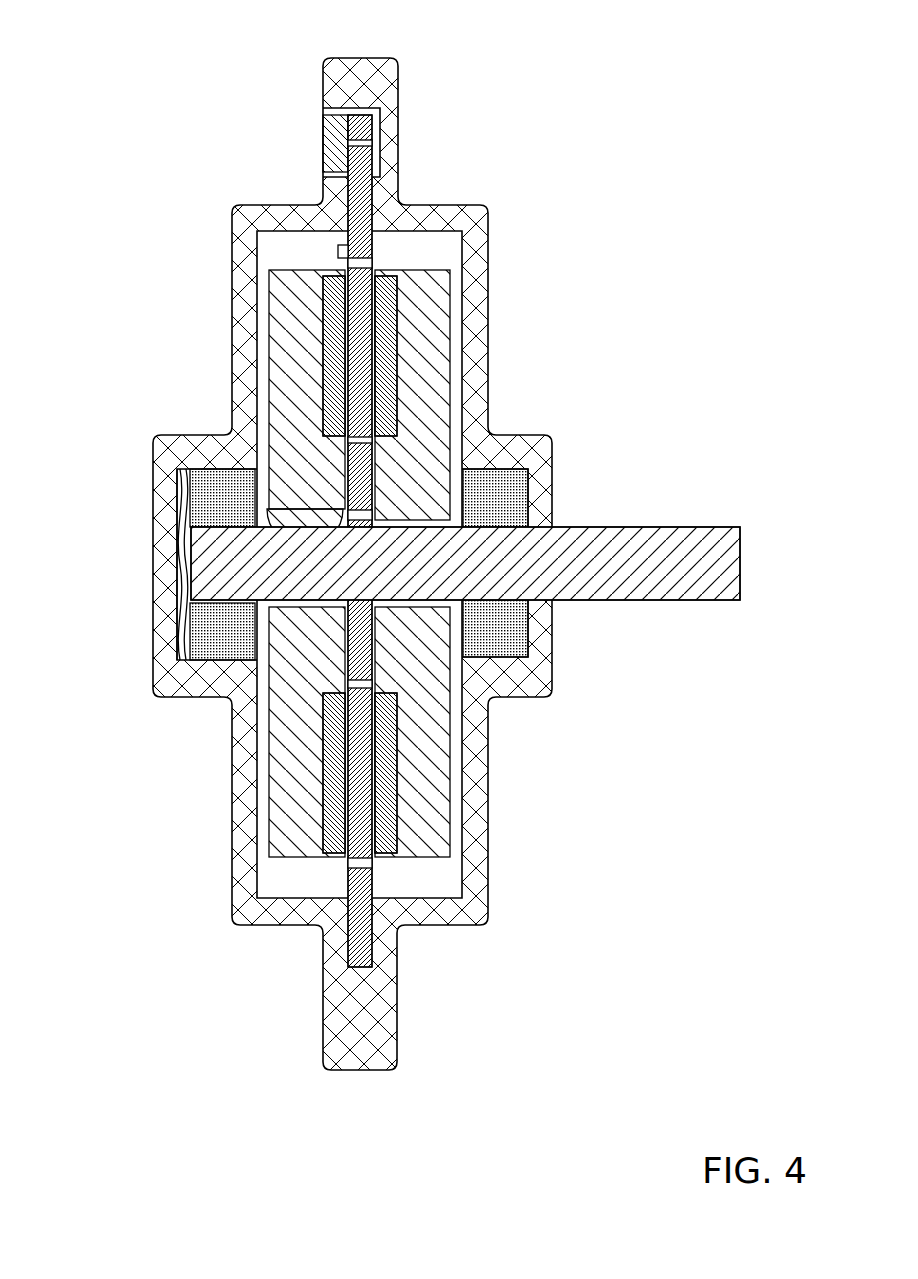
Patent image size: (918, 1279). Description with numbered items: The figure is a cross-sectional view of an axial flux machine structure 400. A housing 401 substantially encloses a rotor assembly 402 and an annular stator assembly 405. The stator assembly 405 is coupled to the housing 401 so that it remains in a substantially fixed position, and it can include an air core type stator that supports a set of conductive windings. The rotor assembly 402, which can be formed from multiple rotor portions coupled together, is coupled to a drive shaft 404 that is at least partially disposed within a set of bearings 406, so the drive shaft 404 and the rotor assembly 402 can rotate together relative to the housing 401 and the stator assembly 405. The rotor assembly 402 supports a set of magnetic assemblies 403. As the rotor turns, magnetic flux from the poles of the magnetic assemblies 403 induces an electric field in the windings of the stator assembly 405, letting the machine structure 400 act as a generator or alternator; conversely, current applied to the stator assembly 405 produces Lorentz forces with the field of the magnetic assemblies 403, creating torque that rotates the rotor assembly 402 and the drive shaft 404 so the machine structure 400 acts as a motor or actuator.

The axial flux machine structure 400 is at (160, 46).
The housing 401 is at (460, 212).
The rotor assembly 402 is at (285, 338).
The magnetic assemblies 403 is at (325, 392).
The drive shaft 404 is at (618, 550).
The annular stator assembly 405 is at (370, 935).
The bearings 406 is at (510, 640).